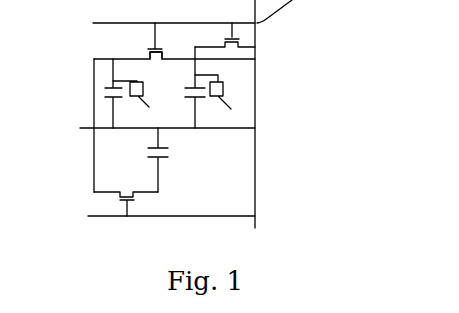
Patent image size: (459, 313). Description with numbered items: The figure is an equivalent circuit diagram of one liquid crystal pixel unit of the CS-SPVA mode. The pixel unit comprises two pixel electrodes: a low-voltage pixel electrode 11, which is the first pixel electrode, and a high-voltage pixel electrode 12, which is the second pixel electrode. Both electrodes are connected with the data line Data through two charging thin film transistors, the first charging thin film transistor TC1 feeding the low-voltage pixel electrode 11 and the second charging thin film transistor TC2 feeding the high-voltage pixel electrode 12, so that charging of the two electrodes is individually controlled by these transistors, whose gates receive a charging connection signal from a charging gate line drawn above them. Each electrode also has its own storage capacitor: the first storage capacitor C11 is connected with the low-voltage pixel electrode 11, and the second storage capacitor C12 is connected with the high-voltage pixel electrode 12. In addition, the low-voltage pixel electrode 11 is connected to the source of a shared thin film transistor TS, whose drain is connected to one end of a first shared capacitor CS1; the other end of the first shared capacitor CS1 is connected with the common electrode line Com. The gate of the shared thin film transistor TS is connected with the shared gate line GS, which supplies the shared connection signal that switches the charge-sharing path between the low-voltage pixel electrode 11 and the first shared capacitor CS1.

The data line Data is at (256, 58).
The common electrode line Com is at (266, 128).
The shared gate line GS is at (271, 216).
The first charging thin film transistor TC1 is at (150, 56).
The second charging thin film transistor TC2 is at (228, 45).
The first storage capacitor C11 is at (105, 94).
The second storage capacitor C12 is at (186, 91).
The low-voltage pixel electrode 11 is at (157, 133).
The high-voltage pixel electrode 12 is at (216, 102).
The first shared capacitor CS1 is at (170, 157).
The shared thin film transistor TS is at (136, 197).